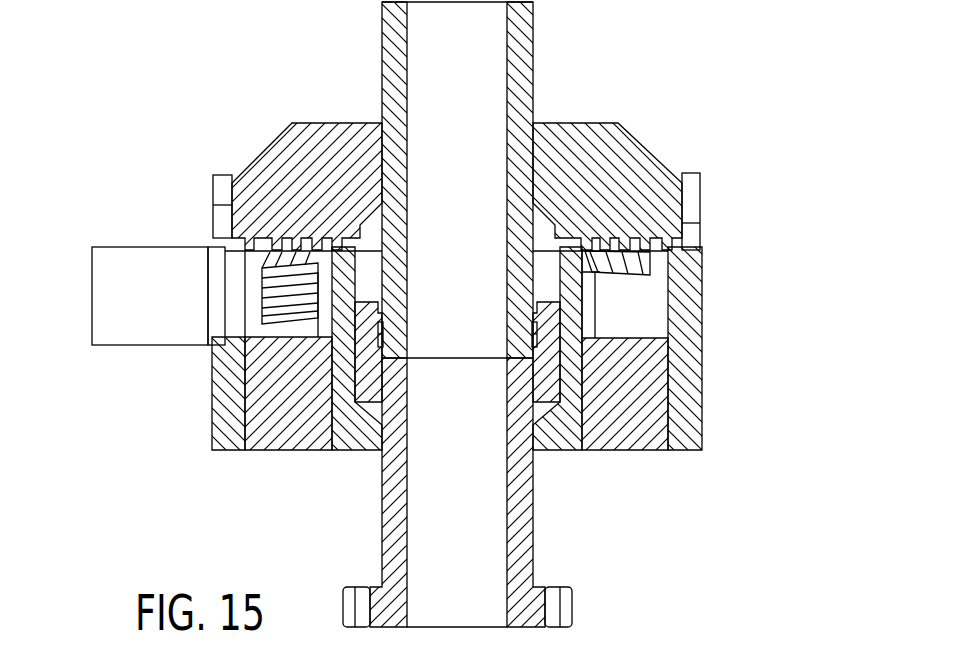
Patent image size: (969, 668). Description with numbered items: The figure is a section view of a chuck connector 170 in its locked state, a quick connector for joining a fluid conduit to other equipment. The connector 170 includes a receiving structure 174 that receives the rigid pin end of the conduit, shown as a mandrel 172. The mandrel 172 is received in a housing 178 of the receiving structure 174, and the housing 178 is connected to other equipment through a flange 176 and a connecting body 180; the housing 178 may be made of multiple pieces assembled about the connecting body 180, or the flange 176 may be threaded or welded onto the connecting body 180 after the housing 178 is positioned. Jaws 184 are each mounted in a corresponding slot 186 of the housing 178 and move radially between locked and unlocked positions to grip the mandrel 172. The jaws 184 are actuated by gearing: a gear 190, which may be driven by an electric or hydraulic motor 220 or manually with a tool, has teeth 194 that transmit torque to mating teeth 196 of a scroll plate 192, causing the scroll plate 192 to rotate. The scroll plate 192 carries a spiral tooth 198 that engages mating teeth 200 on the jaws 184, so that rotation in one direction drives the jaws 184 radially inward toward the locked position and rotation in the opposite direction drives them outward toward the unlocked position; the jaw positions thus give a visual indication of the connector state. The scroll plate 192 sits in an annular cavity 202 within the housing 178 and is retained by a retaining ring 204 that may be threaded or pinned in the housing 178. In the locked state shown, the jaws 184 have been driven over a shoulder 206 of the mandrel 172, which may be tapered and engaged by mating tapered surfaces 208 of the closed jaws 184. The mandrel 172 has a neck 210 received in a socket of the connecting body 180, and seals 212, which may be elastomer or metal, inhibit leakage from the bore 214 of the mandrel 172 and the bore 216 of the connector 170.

The chuck connector 170 is at (175, 72).
The mandrel 172 is at (524, 36).
The receiving structure 174 is at (563, 456).
The flange 176 is at (570, 608).
The housing 178 is at (348, 453).
The connecting body 180 is at (527, 572).
The jaws 184 is at (283, 150).
The slot 186 is at (222, 242).
The gear 190 is at (232, 318).
The scroll plate 192 is at (700, 186).
The teeth 194 is at (283, 320).
The mating teeth 196 is at (617, 278).
The spiral tooth 198 is at (655, 237).
The mating teeth 200 is at (280, 262).
The annular cavity 202 is at (652, 322).
The retaining ring 204 is at (660, 452).
The shoulder 206 is at (398, 228).
The tapered surfaces 208 is at (531, 224).
The neck 210 is at (520, 312).
The seals 212 is at (386, 338).
The bore 214 is at (408, 126).
The bore 216 is at (408, 527).
The motor 220 is at (100, 290).